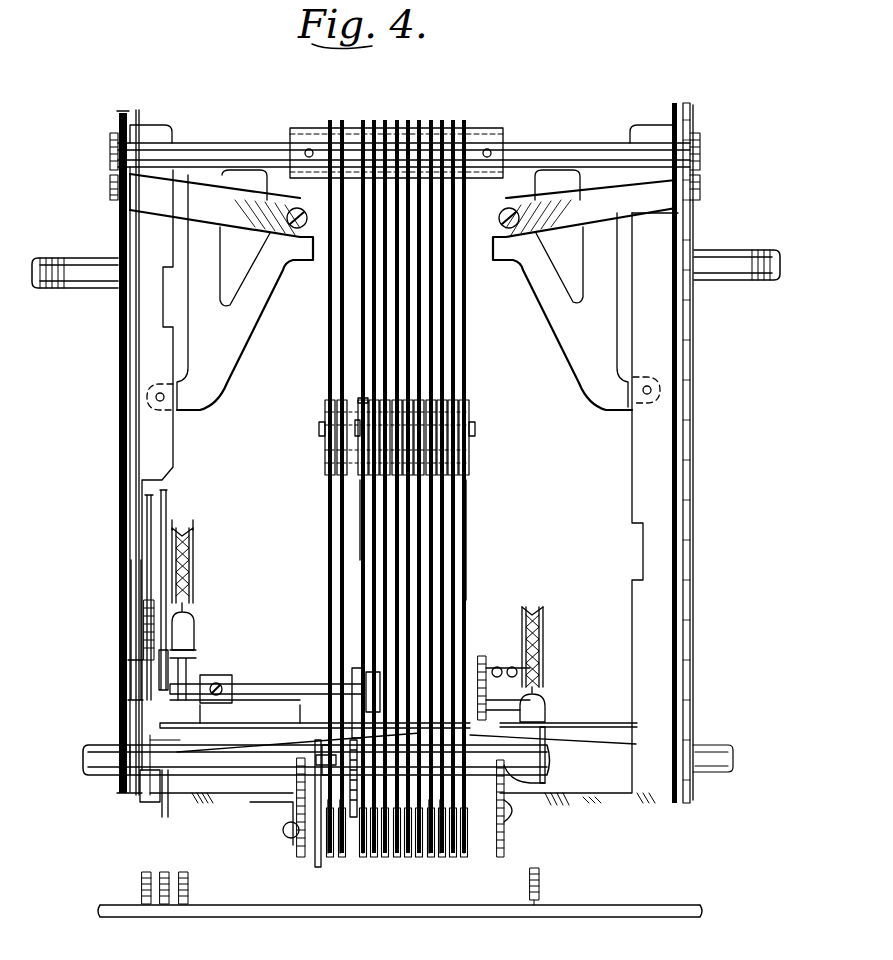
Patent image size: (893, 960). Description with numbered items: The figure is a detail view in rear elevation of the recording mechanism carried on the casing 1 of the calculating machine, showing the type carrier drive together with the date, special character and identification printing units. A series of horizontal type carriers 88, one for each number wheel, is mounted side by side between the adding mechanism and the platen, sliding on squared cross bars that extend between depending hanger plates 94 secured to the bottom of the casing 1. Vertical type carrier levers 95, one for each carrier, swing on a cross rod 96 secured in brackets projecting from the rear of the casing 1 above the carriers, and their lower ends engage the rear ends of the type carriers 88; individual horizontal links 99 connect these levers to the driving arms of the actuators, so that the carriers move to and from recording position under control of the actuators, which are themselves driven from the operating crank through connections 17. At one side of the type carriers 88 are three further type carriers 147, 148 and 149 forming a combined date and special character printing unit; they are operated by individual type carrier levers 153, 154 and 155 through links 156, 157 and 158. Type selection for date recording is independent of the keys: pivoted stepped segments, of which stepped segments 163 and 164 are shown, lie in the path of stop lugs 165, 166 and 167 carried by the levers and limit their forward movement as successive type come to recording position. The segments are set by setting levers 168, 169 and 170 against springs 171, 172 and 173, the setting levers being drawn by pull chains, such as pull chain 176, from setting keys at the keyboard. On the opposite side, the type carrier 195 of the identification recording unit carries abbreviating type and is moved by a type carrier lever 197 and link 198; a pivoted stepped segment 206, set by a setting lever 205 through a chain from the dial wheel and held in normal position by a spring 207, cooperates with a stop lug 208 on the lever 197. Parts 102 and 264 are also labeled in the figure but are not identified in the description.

The casing 1 is at (655, 345).
The connections 17 is at (66, 258).
The cross rod 96 is at (540, 143).
The type carrier levers 95 is at (455, 302).
The links 99 is at (440, 392).
The link 198 is at (466, 445).
The link 156 is at (324, 448).
The link 157 is at (340, 392).
The link 158 is at (360, 398).
The type carrier lever 155 is at (360, 512).
The type carrier lever 154 is at (345, 536).
The type carrier lever 153 is at (330, 560).
The type carrier lever 197 is at (470, 580).
The setting lever 168 is at (147, 520).
The setting lever 169 is at (170, 494).
The pull chain 176 is at (188, 533).
The setting lever 170 is at (195, 580).
The spring 171 is at (140, 655).
The spring 172 is at (170, 674).
The spring 173 is at (185, 872).
The stop lug 167 is at (360, 680).
The stop lug 166 is at (340, 688).
The stepped segment 164 is at (360, 672).
The stepped segment 163 is at (330, 760).
The stop lug 165 is at (350, 760).
The stepped segment 206 is at (482, 660).
The spring hook 264 is at (536, 608).
The setting lever 205 is at (546, 631).
The stop lug 208 is at (540, 688).
The hanger plates 94 is at (297, 850).
The bar 102 is at (315, 862).
The type carrier 147 is at (331, 860).
The type carrier 148 is at (343, 860).
The type carrier 149 is at (366, 858).
The type carriers 88 is at (443, 860).
The type carrier 195 is at (466, 860).
The spring 207 is at (541, 883).